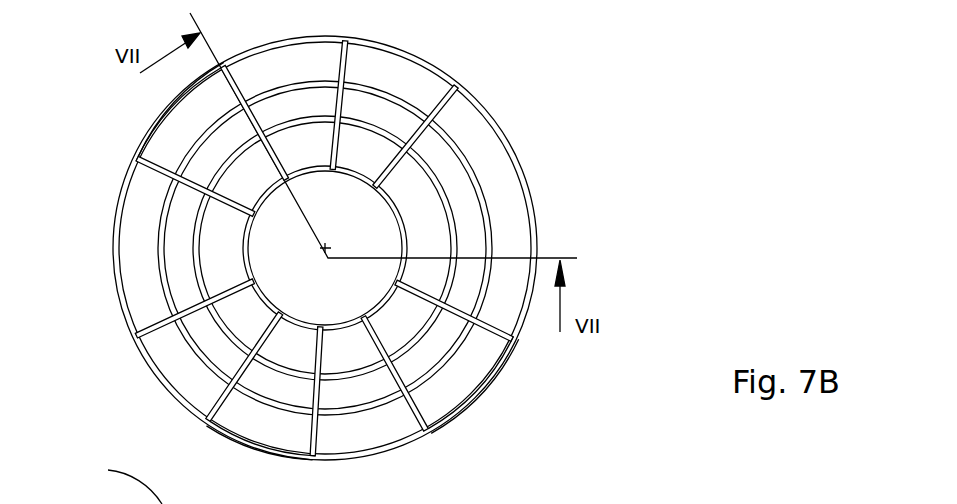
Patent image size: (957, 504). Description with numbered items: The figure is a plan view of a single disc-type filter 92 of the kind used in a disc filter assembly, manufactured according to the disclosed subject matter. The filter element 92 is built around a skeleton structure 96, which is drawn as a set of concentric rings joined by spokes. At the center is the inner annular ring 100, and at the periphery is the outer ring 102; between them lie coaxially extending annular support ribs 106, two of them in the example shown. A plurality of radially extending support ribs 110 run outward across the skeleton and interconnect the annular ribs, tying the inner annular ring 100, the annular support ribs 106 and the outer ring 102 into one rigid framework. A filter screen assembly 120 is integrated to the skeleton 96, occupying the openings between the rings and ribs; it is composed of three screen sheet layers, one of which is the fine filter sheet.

The disc-type filter 92 is at (203, 434).
The skeleton structure 96 is at (132, 175).
The inner annular ring 100 is at (340, 173).
The outer ring 102 is at (513, 152).
The annular support ribs 106 is at (488, 243).
The radially extending support ribs 110 is at (157, 332).
The filter screen assembly 120 is at (258, 418).